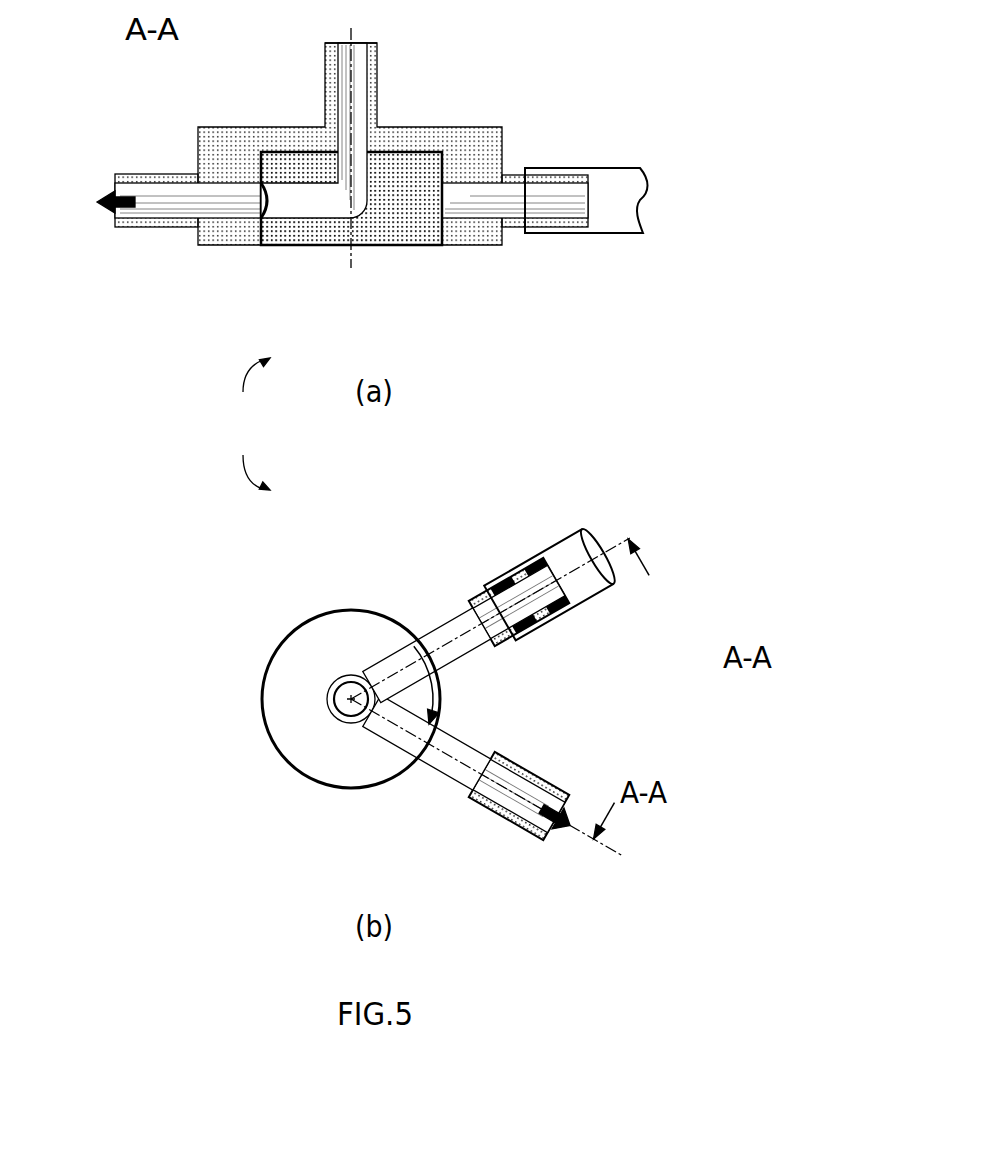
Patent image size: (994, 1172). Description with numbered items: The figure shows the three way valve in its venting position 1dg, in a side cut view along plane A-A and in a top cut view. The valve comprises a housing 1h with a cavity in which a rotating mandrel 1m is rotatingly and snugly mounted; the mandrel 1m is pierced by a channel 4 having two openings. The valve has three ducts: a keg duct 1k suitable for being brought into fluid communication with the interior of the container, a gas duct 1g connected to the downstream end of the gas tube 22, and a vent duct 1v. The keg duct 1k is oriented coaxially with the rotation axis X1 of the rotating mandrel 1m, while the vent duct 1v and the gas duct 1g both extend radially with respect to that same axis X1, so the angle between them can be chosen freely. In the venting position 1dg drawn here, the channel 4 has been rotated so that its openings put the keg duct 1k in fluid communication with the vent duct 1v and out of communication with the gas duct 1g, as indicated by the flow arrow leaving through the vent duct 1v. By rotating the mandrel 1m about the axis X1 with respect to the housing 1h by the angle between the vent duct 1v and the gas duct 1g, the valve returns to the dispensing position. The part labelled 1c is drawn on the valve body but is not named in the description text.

The venting position 1dg is at (268, 442).
The body block 1c is at (488, 127).
The vent duct 1v is at (187, 174).
The gas duct 1g is at (510, 175).
The gas tube 22 is at (597, 168).
The channel 4 is at (296, 200).
The keg duct 1k is at (378, 92).
The housing 1h is at (427, 246).
The rotating mandrel 1m is at (377, 627).
The rotation axis X1 is at (652, 540).